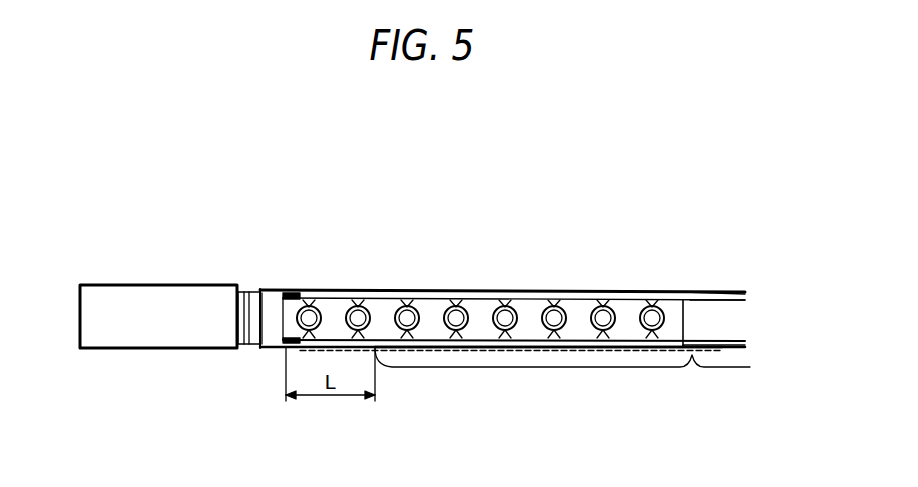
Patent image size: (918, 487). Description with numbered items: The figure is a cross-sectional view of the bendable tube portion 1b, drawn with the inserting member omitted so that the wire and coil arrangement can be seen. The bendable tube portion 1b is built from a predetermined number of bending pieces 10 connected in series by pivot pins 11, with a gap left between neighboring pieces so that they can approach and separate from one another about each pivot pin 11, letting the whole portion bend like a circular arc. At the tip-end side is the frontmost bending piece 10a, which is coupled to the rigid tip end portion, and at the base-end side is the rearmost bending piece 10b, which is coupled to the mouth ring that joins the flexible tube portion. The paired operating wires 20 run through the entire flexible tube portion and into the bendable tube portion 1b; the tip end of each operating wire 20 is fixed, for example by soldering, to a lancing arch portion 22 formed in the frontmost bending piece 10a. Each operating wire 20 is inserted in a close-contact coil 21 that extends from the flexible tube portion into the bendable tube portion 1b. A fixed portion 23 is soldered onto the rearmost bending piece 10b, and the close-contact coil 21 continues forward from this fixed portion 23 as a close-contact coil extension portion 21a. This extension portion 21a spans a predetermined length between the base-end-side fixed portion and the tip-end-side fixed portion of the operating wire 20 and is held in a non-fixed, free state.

The bendable tube portion 1b is at (597, 197).
The bending pieces 10 is at (354, 290).
The frontmost bending piece 10a is at (273, 350).
The rearmost base end bending piece 10b is at (666, 288).
The pivot pins 11 is at (341, 300).
The operating wires 20 is at (622, 288).
The close-contact coil 21 is at (734, 288).
The close-contact coil extension portion 21a is at (537, 288).
The lancing arch portion 22 is at (290, 289).
The fixed portion 23 is at (683, 288).